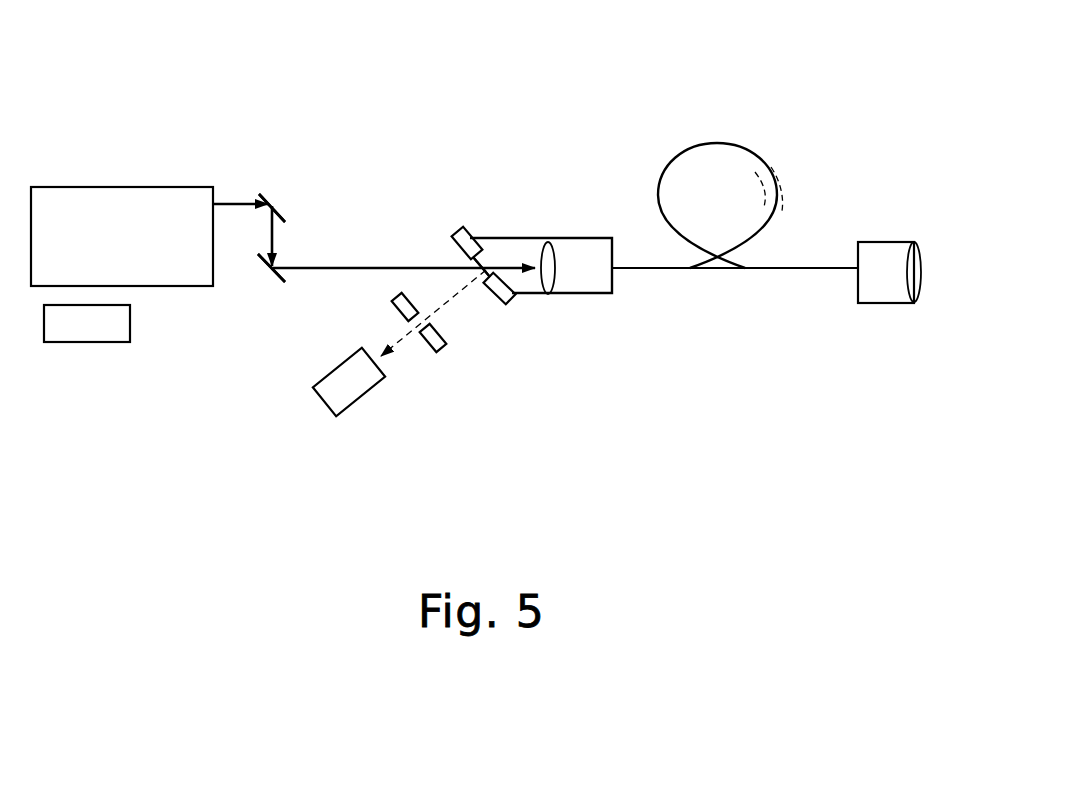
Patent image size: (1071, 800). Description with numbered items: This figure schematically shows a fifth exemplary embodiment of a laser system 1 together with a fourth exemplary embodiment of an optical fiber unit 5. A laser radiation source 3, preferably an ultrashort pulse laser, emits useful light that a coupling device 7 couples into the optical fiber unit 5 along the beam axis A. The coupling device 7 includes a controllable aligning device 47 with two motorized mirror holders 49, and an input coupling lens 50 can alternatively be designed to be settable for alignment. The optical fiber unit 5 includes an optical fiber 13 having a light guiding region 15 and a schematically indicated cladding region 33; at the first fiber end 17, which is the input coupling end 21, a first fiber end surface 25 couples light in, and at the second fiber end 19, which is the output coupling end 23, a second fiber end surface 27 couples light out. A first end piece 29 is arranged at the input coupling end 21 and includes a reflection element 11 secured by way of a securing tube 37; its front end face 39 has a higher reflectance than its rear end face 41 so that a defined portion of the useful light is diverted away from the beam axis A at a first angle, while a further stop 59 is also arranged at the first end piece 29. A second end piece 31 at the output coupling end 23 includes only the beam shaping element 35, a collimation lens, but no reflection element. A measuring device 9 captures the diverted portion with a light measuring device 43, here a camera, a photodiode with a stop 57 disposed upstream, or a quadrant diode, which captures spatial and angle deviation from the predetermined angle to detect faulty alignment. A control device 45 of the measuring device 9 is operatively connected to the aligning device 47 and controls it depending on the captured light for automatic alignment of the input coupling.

The laser system 1 is at (521, 81).
The laser radiation source 3 is at (122, 186).
The optical fiber unit 5 is at (751, 83).
The coupling device 7 is at (292, 290).
The measuring device 9 is at (425, 367).
The reflection element 11 is at (483, 267).
The optical fiber 13 is at (734, 143).
The light guiding region 15 is at (750, 270).
The first fiber end 17 is at (632, 348).
The input coupling end 21 is at (608, 304).
The second fiber end 19 is at (802, 389).
The output coupling end 23 is at (835, 322).
The first fiber end surface 25 is at (606, 267).
The second fiber end surface 27 is at (861, 272).
The first end piece 29 is at (545, 192).
The second end piece 31 is at (888, 240).
The cladding region 33 is at (780, 178).
The optical beam shaping element 35 is at (915, 292).
The securing tube 37 is at (510, 237).
The front end face 39 is at (484, 281).
The rear end face 41 is at (509, 283).
The light measuring device 43 is at (367, 400).
The control device 45 is at (90, 343).
The aligning device 47 is at (272, 180).
The motorized mirror holders 49 is at (274, 205).
The input coupling lens 50 is at (549, 294).
The stop 57 is at (392, 302).
The further stop 59 is at (457, 235).
The beam axis A is at (405, 267).